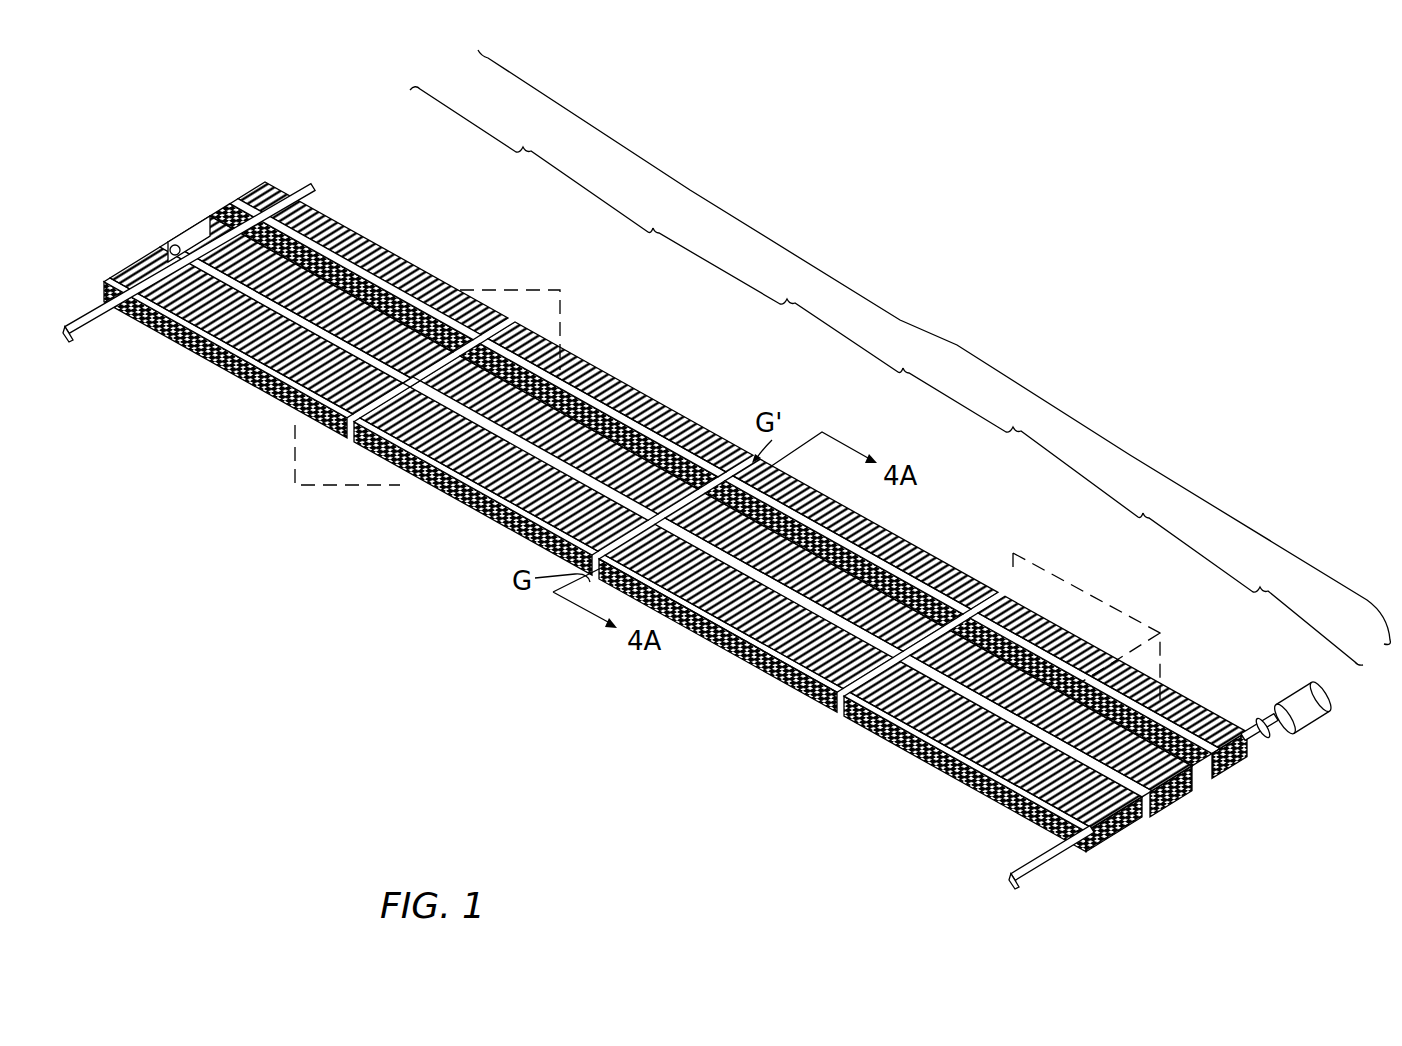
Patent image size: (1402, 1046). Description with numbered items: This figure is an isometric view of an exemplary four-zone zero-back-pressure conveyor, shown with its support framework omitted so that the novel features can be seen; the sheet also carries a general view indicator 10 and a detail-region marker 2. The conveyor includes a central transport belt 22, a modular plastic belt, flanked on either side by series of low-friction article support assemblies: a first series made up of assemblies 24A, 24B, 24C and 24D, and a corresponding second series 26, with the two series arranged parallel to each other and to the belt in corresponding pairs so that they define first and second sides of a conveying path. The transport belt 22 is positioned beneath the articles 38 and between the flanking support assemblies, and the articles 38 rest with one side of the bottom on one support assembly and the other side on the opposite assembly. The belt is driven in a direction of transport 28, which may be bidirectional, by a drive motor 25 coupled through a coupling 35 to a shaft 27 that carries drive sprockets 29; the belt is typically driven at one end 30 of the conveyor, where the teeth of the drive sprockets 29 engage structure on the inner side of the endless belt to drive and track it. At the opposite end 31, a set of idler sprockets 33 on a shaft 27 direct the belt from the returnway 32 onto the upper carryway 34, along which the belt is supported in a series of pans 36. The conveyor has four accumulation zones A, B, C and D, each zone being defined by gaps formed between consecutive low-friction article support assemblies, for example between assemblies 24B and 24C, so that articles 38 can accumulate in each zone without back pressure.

The modular conveyor belt 10 is at (699, 527).
The belt module detail region 2 is at (563, 290).
The central transport belt 22 is at (336, 233).
The low-friction article support assembly 24A is at (229, 382).
The low-friction article support assembly 24B is at (455, 518).
The low-friction article support assembly 24C is at (778, 700).
The low-friction article support assembly 24D is at (925, 783).
The drive motor 25 is at (1300, 690).
The second series of low-friction article support assemblies 26 is at (958, 349).
The shaft 27 is at (311, 184).
The direction of transport 28 is at (622, 516).
The drive sprockets 29 is at (1133, 840).
The end of the conveyor 30 is at (1173, 820).
The opposite end of the conveyor 31 is at (179, 233).
The returnway 32 is at (381, 380).
The idler sprockets 33 is at (166, 258).
The upper carryway 34 is at (628, 400).
The coupling 35 is at (1258, 720).
The pans 36 is at (722, 665).
The articles 38 is at (1093, 594).
The accumulation zone A is at (531, 160).
The accumulation zone B is at (778, 300).
The accumulation zone C is at (1023, 443).
The accumulation zone D is at (1253, 589).